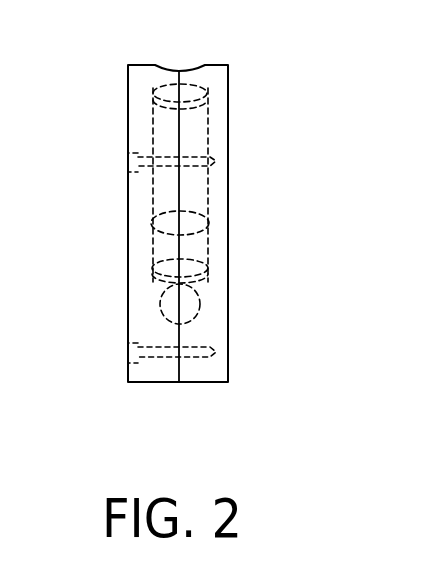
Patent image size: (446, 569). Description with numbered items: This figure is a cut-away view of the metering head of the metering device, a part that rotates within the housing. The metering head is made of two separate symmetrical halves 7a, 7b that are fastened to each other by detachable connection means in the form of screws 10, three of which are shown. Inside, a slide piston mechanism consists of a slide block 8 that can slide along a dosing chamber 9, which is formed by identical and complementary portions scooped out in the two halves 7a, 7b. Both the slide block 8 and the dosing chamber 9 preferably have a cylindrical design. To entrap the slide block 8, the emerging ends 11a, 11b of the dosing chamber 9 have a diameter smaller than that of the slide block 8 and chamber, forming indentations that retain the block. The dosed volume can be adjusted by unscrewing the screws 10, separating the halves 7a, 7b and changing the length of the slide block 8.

The symmetrical half 7a is at (128, 88).
The symmetrical half 7b is at (228, 105).
The slide block 8 is at (193, 252).
The dosing chamber 9 is at (172, 198).
The screws 10 is at (128, 352).
The emerging end 11a is at (203, 90).
The emerging end 11b is at (199, 302).